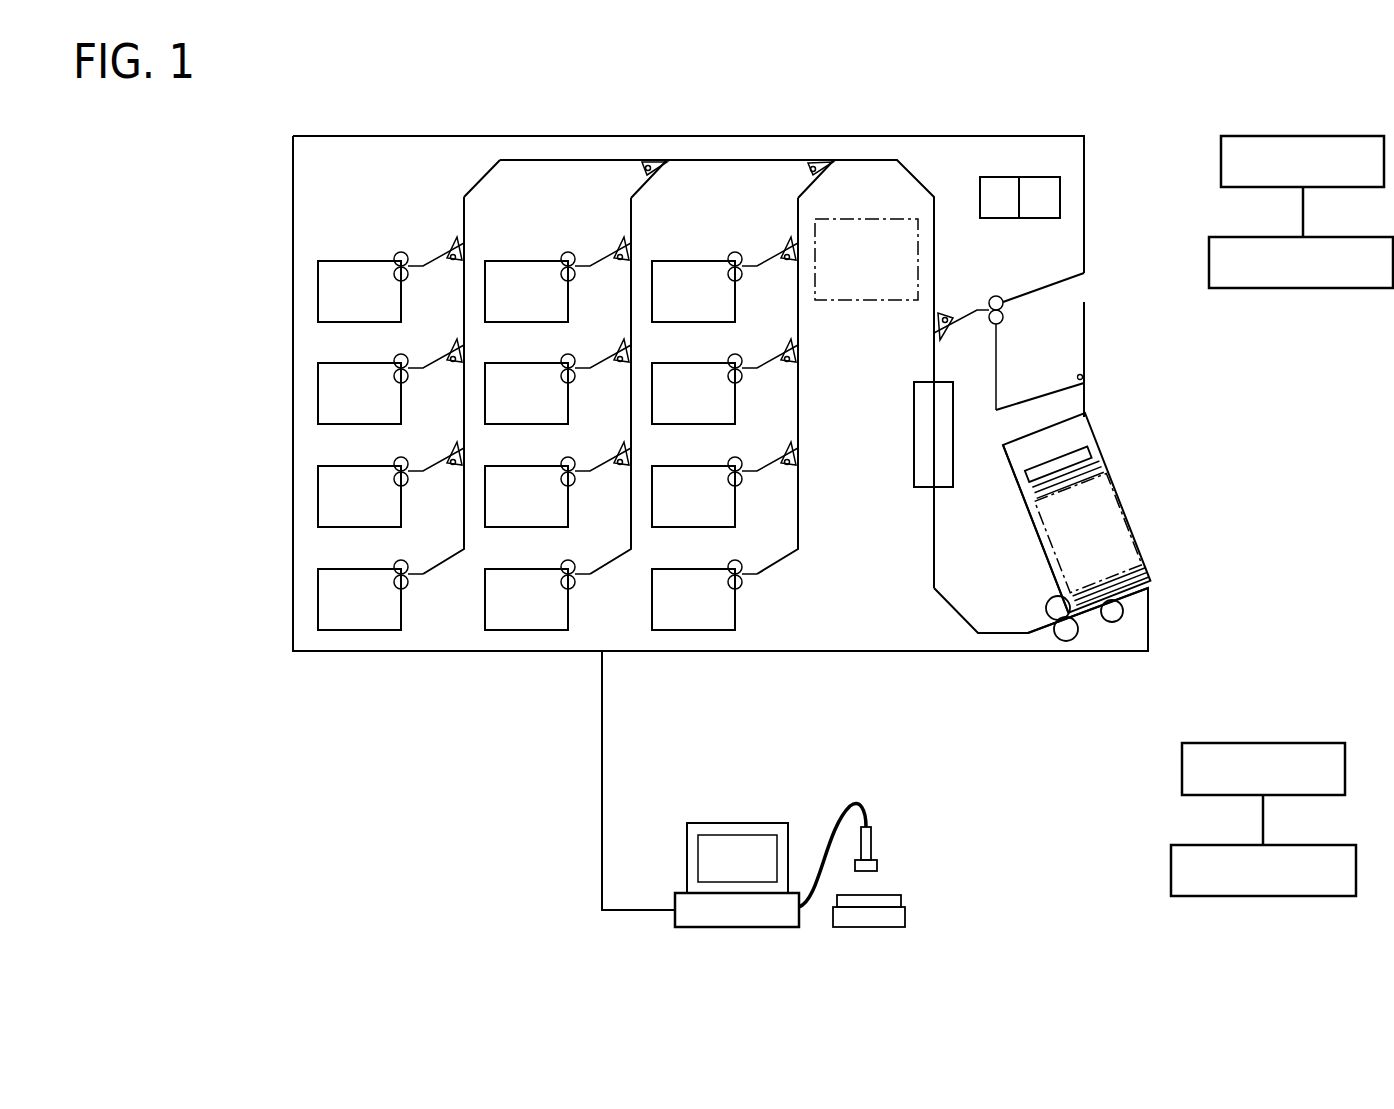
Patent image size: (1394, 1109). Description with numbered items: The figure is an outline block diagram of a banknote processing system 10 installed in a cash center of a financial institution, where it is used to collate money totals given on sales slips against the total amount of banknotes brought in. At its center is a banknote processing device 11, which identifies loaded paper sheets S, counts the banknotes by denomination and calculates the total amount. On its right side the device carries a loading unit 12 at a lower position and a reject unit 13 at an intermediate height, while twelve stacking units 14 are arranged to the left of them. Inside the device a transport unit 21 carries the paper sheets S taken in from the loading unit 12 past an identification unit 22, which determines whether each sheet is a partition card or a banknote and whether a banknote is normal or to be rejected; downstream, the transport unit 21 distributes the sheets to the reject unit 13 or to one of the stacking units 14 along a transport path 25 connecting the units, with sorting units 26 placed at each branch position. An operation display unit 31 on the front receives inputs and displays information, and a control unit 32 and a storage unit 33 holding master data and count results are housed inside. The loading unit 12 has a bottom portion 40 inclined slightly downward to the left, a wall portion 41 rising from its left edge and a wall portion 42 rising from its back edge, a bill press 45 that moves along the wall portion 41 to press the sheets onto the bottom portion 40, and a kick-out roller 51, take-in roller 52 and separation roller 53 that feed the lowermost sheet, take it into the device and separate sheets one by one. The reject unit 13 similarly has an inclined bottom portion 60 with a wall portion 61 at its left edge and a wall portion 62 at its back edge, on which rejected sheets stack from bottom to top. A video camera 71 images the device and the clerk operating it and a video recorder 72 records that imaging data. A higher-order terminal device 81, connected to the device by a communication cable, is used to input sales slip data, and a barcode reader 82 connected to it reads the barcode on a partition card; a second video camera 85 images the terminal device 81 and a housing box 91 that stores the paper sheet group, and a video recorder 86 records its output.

The banknote processing system 10 is at (343, 121).
The banknote processing device 11 is at (1092, 120).
The loading unit 12 is at (1156, 574).
The reject unit 13 is at (1094, 341).
The stacking unit 14 is at (352, 257).
The transport unit 21 is at (930, 578).
The identification unit 22 is at (914, 441).
The transport path 25 is at (932, 528).
The sorting unit 26 is at (946, 313).
The operation display unit 31 is at (856, 218).
The control unit 32 is at (1041, 178).
The storage unit 33 is at (1002, 178).
The bottom portion 40 is at (1122, 583).
The wall portion 41 is at (1012, 457).
The wall portion 42 is at (1076, 440).
The bill press 45 is at (1090, 458).
The kick-out roller 51 is at (1111, 624).
The take-in roller 52 is at (1065, 641).
The separation roller 53 is at (1046, 608).
The bottom portion 60 is at (1042, 392).
The wall portion 61 is at (1003, 356).
The wall portion 62 is at (1053, 296).
The video camera 71 is at (1320, 135).
The video recorder 72 is at (1313, 289).
The higher-order terminal device 81 is at (710, 934).
The barcode reader 82 is at (873, 848).
The video camera 85 is at (1261, 742).
The video recorder 86 is at (1260, 897).
The housing box 91 is at (868, 928).
The paper sheet S is at (892, 896).